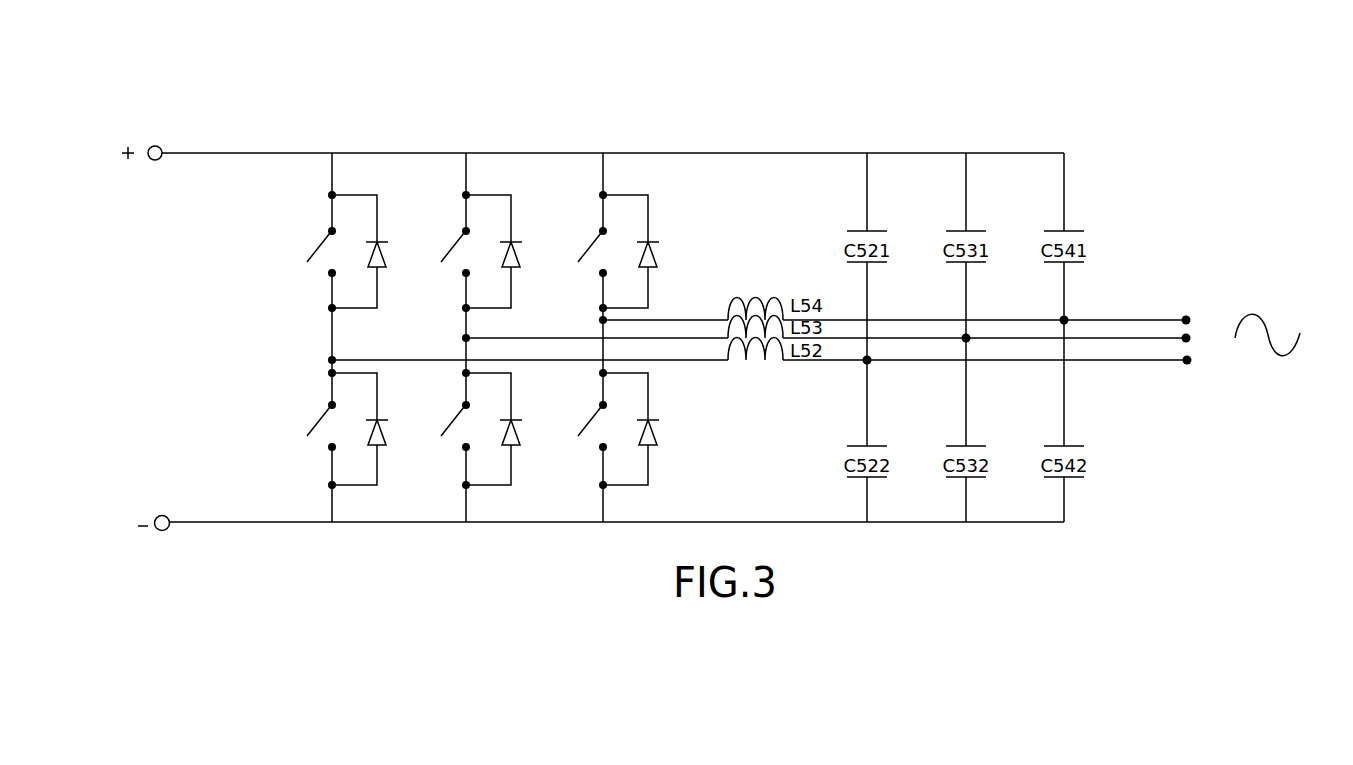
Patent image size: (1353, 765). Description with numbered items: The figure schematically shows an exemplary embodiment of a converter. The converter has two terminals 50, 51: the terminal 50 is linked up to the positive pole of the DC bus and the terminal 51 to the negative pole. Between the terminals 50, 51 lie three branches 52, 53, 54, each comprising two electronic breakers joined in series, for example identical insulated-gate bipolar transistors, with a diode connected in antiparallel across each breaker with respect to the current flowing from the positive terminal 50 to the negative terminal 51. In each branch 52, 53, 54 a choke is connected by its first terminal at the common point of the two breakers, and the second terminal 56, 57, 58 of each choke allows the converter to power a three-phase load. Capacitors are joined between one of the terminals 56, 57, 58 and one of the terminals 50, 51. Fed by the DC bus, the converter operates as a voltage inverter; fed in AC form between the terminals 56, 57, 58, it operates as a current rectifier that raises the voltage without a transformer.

The terminal 50 is at (162, 149).
The terminal 51 is at (168, 517).
The branch 52 is at (340, 127).
The branch 53 is at (468, 127).
The branch 54 is at (608, 127).
The second terminal of choke 56 is at (1190, 363).
The second terminal of choke 57 is at (1189, 335).
The second terminal of choke 58 is at (1188, 316).